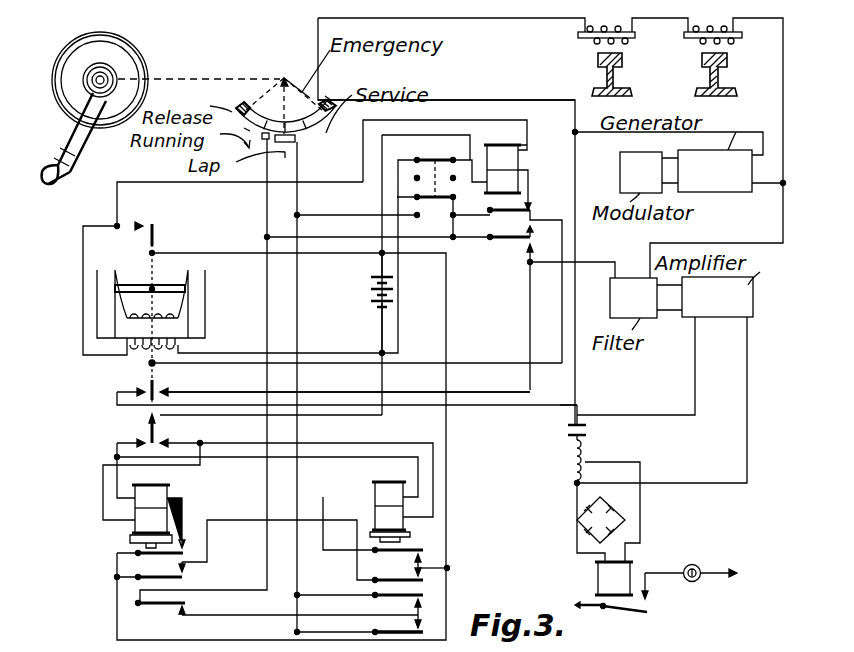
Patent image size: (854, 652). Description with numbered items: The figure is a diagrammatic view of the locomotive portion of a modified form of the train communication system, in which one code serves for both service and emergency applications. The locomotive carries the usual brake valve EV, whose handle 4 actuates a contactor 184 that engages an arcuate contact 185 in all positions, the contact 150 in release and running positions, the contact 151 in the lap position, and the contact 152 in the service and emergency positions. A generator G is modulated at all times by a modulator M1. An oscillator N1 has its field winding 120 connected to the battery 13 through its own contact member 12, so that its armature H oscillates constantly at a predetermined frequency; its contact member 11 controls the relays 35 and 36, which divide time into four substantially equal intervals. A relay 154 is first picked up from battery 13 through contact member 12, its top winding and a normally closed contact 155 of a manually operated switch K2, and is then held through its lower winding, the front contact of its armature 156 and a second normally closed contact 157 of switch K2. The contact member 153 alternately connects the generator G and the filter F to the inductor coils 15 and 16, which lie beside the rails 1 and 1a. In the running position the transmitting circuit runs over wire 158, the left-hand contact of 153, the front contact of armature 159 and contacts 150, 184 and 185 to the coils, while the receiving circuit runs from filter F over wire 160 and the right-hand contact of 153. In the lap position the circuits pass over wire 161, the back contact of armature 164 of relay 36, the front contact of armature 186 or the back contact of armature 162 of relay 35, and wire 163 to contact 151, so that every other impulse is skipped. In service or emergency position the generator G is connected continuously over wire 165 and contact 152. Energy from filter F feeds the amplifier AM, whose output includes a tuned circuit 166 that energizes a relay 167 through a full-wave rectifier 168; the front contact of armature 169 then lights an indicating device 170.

The rail 1 is at (614, 80).
The rail 1a is at (710, 78).
The handle 4 is at (44, 175).
The contact member 11 is at (165, 432).
The contact member 12 is at (154, 232).
The battery 13 is at (366, 295).
The inductor coil 15 is at (590, 30).
The inductor coil 16 is at (694, 30).
The relay 35 is at (378, 493).
The relay 36 is at (160, 500).
The field winding 120 is at (150, 366).
The contact 150 is at (240, 104).
The contact 151 is at (302, 131).
The contact 152 is at (328, 100).
The contact member 153 is at (162, 388).
The relay 154 is at (520, 182).
The normally closed contact 155 is at (417, 163).
The armature 156 is at (524, 216).
The normally closed contact 157 is at (428, 200).
The wire 158 is at (578, 396).
The armature 159 is at (525, 242).
The wire 160 is at (472, 383).
The wire 161 is at (268, 562).
The armature 162 is at (378, 598).
The wire 163 is at (318, 558).
The armature 164 is at (158, 610).
The wire 165 is at (526, 100).
The tuned circuit 166 is at (595, 445).
The relay 167 is at (590, 580).
The full-wave rectifier 168 is at (580, 512).
The armature 169 is at (652, 606).
The indicating device 170 is at (697, 566).
The contactor 184 is at (284, 78).
The arcuate contact 185 is at (258, 92).
The armature 186 is at (380, 634).
The brake valve EV is at (70, 50).
The oscillator N1 is at (150, 306).
The armature H is at (144, 286).
The manually operated switch K2 is at (442, 172).
The modulator M1 is at (641, 172).
The generator G is at (715, 171).
The filter F is at (633, 298).
The amplifier AM is at (717, 297).